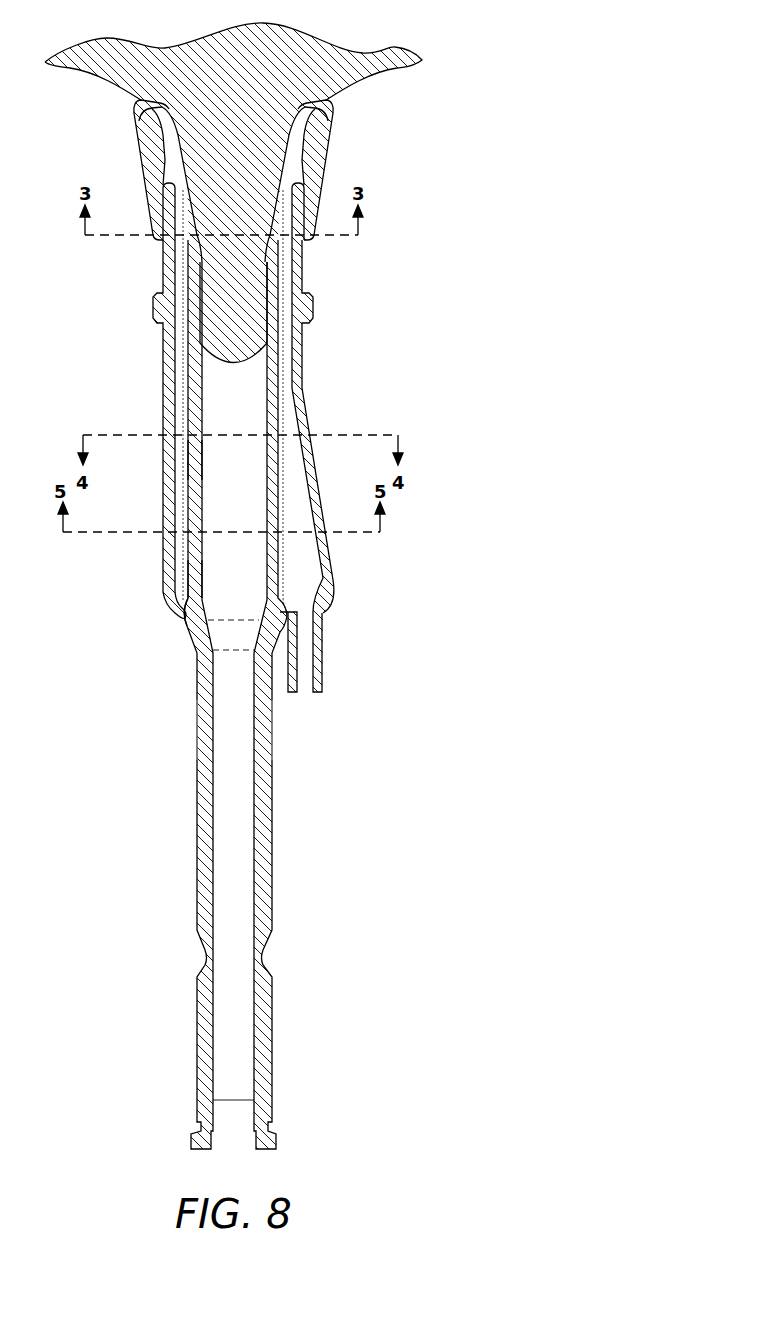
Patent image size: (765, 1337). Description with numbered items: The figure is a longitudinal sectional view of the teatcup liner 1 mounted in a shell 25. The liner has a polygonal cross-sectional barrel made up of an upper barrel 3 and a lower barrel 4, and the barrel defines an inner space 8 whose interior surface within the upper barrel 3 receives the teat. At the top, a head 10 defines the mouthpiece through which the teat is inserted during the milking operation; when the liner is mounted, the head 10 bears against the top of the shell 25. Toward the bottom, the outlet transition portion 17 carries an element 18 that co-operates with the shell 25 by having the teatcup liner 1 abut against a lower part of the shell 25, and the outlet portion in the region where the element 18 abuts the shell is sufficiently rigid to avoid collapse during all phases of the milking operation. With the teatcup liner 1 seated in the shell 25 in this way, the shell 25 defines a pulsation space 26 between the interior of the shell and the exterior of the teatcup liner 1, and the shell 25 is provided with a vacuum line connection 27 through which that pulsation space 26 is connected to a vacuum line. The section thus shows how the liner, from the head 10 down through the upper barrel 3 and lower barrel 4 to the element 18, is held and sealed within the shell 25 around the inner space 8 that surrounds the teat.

The teatcup liner 1 is at (155, 748).
The upper barrel 3 is at (275, 387).
The lower barrel 4 is at (193, 463).
The inner space 8 is at (243, 482).
The head 10 is at (323, 152).
The outlet transition portion 17 is at (195, 582).
The element of the outlet transition portion 18 is at (181, 620).
The shell 25 is at (170, 414).
The pulsation space 26 is at (182, 498).
The vacuum line connection 27 is at (304, 667).
The element teat is at (232, 272).